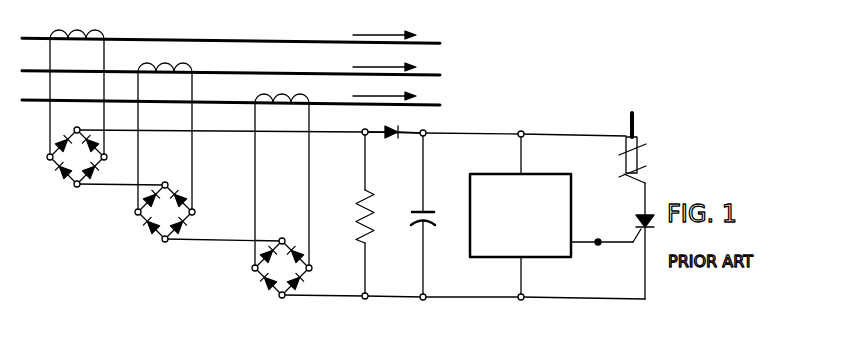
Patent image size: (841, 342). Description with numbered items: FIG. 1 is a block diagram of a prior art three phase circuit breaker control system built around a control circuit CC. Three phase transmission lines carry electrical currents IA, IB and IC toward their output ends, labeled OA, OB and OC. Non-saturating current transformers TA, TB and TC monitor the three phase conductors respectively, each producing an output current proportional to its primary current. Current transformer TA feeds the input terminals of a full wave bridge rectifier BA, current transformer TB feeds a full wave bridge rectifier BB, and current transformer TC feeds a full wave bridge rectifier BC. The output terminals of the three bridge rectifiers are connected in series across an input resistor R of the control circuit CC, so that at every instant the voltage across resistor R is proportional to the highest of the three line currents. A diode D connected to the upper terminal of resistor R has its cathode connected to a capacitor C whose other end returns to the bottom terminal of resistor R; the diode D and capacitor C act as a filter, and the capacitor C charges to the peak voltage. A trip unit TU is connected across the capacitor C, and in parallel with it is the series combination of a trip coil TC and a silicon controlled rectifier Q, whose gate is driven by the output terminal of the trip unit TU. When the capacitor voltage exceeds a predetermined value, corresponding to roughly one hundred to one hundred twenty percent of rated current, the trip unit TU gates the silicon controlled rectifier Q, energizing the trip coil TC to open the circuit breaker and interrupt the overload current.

The current transformer TA is at (101, 29).
The current transformer TB is at (187, 63).
The current transformer / trip coil TC is at (266, 96).
The full wave bridge rectifier BA is at (70, 181).
The full wave bridge rectifier BB is at (160, 236).
The full wave bridge rectifier BC is at (268, 291).
The input resistor R is at (357, 203).
The diode D is at (389, 136).
The capacitor C is at (418, 212).
The trip unit TU is at (534, 226).
The control circuit CC is at (566, 129).
The silicon controlled rectifier Q is at (638, 215).
The electrical current IA is at (371, 31).
The electrical current IB is at (371, 63).
The electrical current IC is at (371, 92).
The output terminal A OA is at (246, 44).
The output terminal B OB is at (246, 76).
The output terminal C OC is at (246, 105).